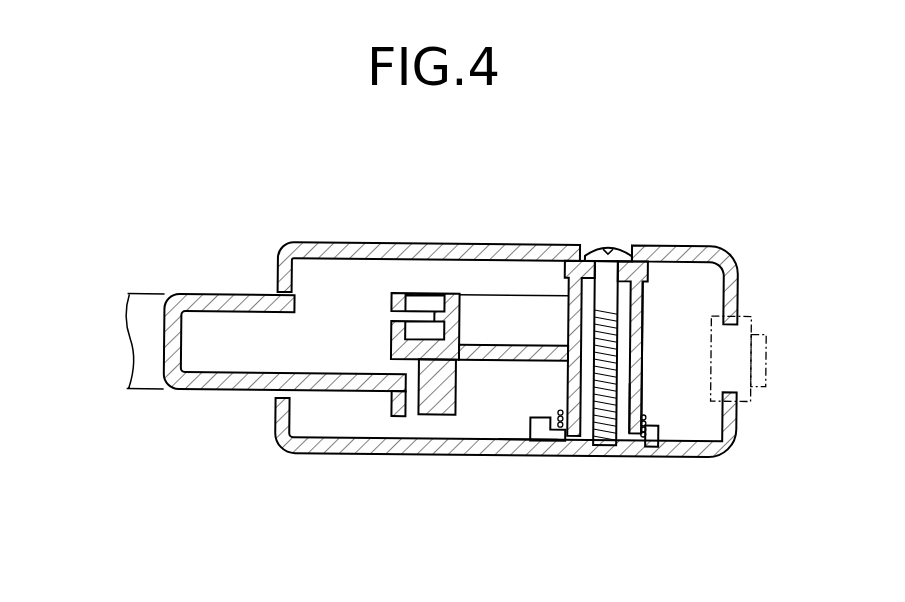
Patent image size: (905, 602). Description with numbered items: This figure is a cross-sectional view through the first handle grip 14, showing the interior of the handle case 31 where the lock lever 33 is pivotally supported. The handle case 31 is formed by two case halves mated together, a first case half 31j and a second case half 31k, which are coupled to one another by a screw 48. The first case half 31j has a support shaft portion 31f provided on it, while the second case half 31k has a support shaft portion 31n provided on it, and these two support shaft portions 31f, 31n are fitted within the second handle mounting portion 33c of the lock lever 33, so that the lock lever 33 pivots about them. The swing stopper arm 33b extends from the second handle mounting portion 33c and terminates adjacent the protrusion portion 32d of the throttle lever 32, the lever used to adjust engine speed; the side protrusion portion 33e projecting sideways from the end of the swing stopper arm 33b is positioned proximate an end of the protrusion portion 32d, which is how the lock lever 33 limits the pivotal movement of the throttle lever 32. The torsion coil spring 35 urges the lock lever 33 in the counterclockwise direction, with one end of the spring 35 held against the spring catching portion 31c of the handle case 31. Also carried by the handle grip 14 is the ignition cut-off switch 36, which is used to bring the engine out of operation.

The first handle grip 14 is at (296, 194).
The handle case 31 is at (456, 367).
The second case half 31k is at (370, 242).
The support shaft portion 31n is at (645, 292).
The first case half 31j is at (343, 453).
The spring catching portion 31c is at (530, 450).
The support shaft portion 31f is at (645, 388).
The throttle lever 32 is at (274, 419).
The protrusion portion 32d is at (376, 394).
The lock lever 33 is at (612, 351).
The swing stopper arm 33b is at (503, 360).
The second handle mounting portion 33c is at (645, 337).
The side protrusion portion 33e is at (442, 415).
The torsion coil spring 35 is at (657, 442).
The ignition cut-off switch 36 is at (762, 382).
The screw 48 is at (607, 243).